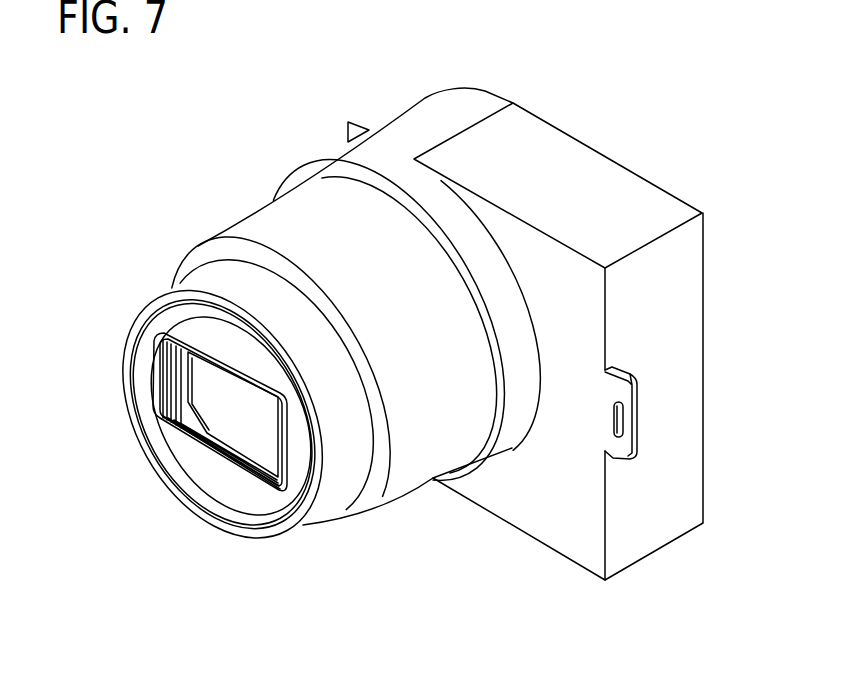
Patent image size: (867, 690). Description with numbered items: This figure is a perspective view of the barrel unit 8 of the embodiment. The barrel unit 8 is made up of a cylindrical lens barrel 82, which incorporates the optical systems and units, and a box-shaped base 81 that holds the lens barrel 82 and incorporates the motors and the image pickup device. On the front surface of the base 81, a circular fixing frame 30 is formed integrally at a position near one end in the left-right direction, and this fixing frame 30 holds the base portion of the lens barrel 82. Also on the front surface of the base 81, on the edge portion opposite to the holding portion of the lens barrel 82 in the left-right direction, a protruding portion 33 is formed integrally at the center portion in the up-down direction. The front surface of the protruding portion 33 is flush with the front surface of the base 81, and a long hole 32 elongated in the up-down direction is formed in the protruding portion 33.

The barrel unit 8 is at (400, 343).
The base 81 is at (552, 548).
The lens barrel 82 is at (258, 220).
The fixing frame 30 is at (511, 444).
The long hole 32 is at (623, 412).
The protruding portion 33 is at (613, 460).